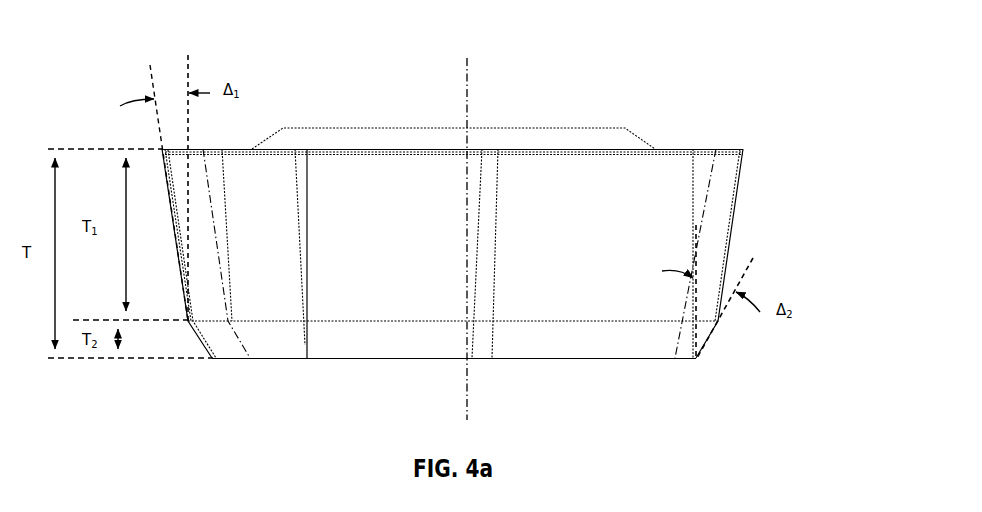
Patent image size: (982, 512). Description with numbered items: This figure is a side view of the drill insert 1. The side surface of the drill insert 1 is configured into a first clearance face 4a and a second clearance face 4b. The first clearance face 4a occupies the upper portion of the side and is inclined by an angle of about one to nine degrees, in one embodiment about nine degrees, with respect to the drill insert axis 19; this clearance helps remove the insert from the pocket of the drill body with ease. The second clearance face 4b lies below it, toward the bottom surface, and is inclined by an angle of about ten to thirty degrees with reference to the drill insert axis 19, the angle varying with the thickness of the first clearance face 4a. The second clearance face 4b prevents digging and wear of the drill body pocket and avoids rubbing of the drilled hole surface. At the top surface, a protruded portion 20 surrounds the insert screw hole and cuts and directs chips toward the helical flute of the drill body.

The drill insert 1 is at (629, 63).
The protruded portion 20 is at (640, 136).
The first clearance face 4a is at (750, 165).
The second clearance face 4b is at (222, 350).
The drill insert axis 19 is at (476, 414).